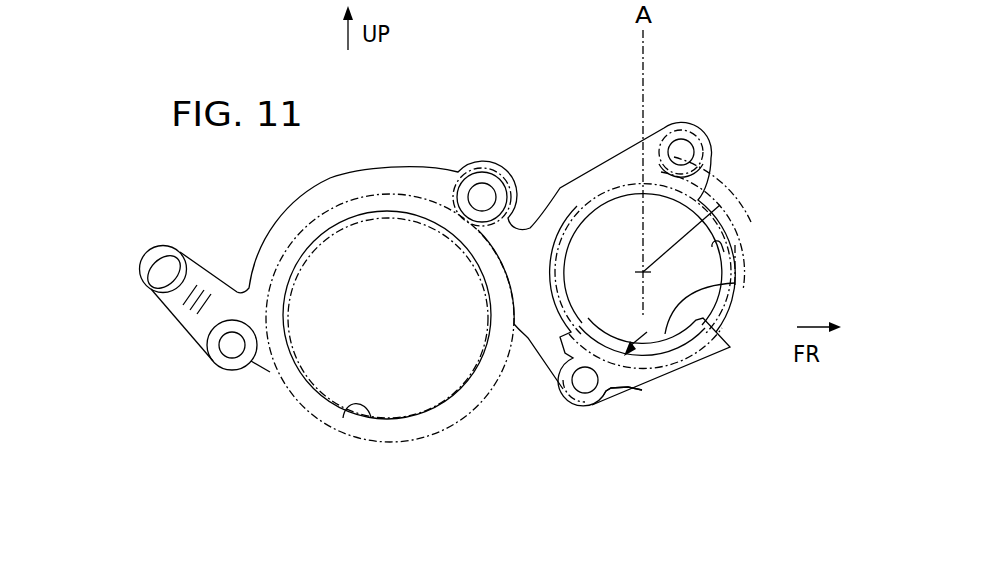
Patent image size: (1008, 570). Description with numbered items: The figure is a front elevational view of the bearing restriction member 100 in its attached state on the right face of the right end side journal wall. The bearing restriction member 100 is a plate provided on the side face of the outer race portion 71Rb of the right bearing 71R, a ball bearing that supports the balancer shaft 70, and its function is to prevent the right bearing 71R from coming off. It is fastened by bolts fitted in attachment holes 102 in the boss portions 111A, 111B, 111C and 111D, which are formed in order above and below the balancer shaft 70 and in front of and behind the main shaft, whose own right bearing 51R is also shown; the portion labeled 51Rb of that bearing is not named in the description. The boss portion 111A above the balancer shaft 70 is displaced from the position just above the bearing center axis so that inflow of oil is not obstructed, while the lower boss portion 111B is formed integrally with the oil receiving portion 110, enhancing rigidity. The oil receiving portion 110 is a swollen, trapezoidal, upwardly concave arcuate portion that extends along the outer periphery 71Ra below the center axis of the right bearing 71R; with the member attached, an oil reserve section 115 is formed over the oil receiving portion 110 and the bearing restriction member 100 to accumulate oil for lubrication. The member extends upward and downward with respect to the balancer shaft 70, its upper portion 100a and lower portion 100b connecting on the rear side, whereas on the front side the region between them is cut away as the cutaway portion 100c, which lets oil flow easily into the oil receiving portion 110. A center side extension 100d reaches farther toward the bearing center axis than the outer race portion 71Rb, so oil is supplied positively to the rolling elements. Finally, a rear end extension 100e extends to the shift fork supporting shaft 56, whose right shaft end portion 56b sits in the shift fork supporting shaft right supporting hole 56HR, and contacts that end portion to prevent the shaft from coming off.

The bearing restriction member 100 is at (557, 195).
The upper portion 100a is at (678, 122).
The lower portion 100b is at (640, 388).
The cutaway portion 100c is at (752, 264).
The center side extension 100d is at (700, 284).
The rear end extension 100e is at (226, 321).
The attachment holes 102 is at (700, 145).
The oil receiving portion 110 is at (637, 397).
The boss portion 111A is at (716, 148).
The boss portion 111B is at (584, 408).
The boss portion 111C is at (461, 166).
The boss portion 111D is at (268, 375).
The oil reserve section 115 is at (684, 391).
The right bearing 51R is at (396, 455).
The projection of right fork pipe 51Rb is at (333, 412).
The shift fork supporting shaft 56 is at (130, 323).
The shift fork supporting shaft right supporting hole 56HR is at (160, 246).
The right shaft end portion 56b is at (158, 286).
The balancer shaft 70 is at (727, 187).
The right bearing 71R is at (737, 204).
The outer periphery 71Ra is at (735, 224).
The outer race portion 71Rb is at (734, 240).